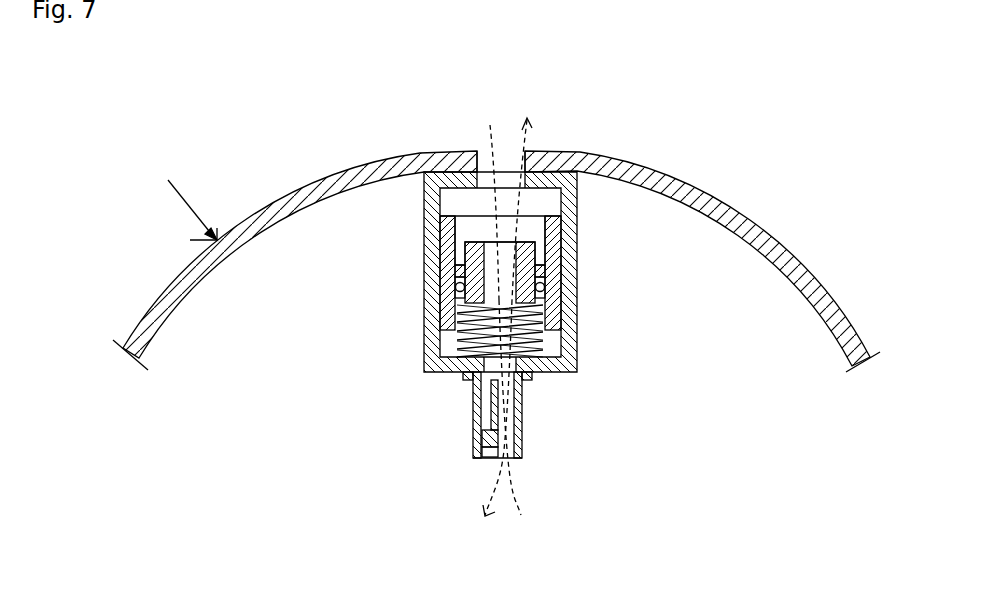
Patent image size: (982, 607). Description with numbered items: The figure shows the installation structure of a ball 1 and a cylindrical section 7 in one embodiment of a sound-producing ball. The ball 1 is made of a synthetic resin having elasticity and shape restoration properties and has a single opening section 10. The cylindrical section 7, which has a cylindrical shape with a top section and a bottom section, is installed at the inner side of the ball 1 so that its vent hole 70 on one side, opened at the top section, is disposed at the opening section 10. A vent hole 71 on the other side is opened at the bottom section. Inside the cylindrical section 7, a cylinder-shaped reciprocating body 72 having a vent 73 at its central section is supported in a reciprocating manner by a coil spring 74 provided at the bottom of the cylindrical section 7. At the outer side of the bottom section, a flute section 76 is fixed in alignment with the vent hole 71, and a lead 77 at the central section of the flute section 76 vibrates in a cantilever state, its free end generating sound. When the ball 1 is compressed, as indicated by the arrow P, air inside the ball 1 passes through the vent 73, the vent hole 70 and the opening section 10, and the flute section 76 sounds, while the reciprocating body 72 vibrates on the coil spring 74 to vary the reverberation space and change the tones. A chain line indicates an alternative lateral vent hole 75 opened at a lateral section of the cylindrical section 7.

The ball 1 is at (748, 223).
The arrow indicating compression P is at (183, 199).
The opening section 10 is at (477, 151).
The cylindrical section 7 is at (577, 237).
The vent hole 70 is at (517, 178).
The vent hole 71 is at (464, 382).
The reciprocating body 72 is at (463, 226).
The vent 73 is at (455, 287).
The coil spring 74 is at (460, 327).
The lateral vent hole 75 is at (562, 343).
The flute section 76 is at (463, 450).
The lead 77 is at (500, 418).